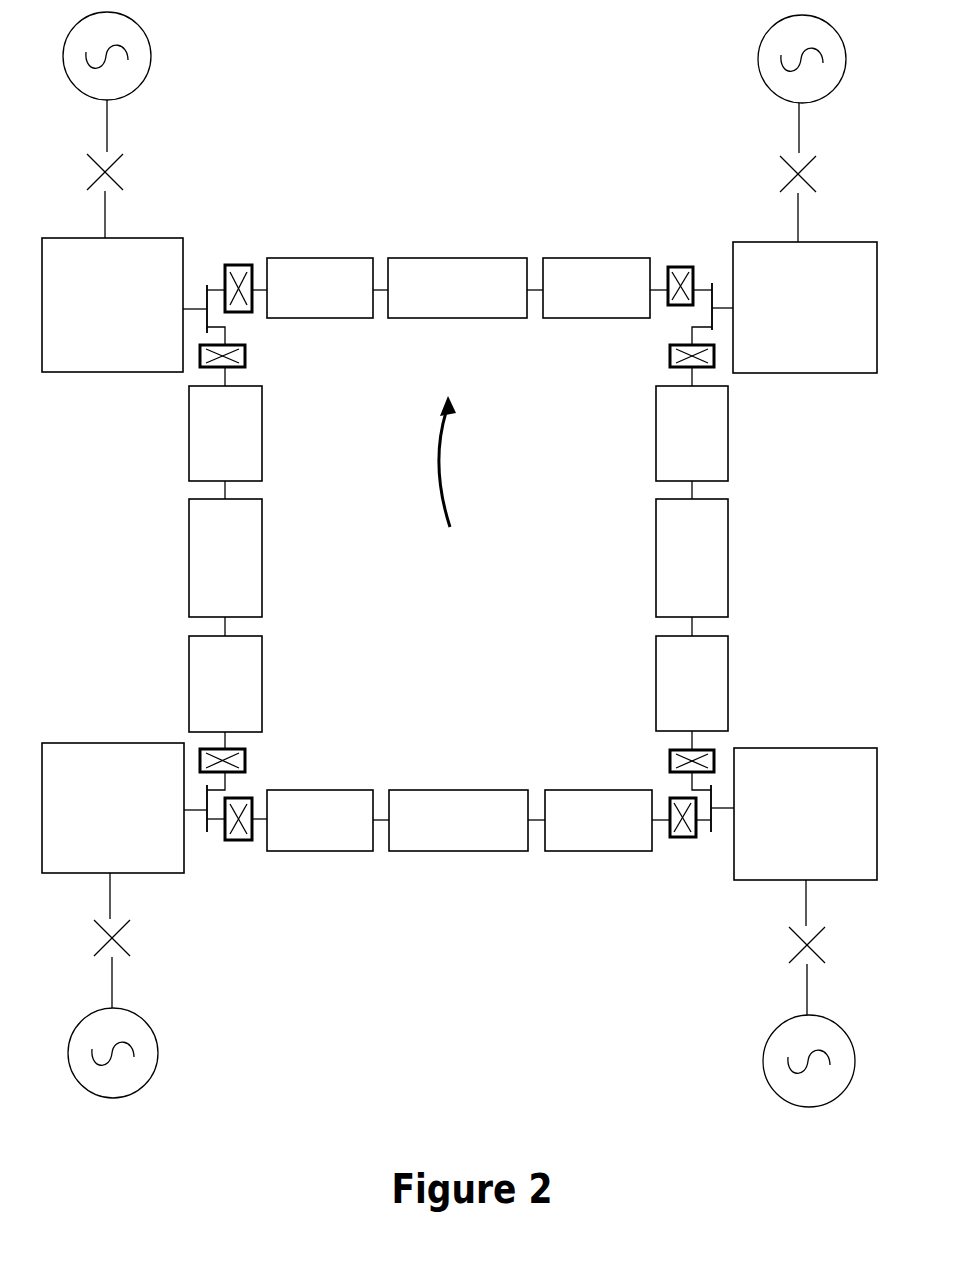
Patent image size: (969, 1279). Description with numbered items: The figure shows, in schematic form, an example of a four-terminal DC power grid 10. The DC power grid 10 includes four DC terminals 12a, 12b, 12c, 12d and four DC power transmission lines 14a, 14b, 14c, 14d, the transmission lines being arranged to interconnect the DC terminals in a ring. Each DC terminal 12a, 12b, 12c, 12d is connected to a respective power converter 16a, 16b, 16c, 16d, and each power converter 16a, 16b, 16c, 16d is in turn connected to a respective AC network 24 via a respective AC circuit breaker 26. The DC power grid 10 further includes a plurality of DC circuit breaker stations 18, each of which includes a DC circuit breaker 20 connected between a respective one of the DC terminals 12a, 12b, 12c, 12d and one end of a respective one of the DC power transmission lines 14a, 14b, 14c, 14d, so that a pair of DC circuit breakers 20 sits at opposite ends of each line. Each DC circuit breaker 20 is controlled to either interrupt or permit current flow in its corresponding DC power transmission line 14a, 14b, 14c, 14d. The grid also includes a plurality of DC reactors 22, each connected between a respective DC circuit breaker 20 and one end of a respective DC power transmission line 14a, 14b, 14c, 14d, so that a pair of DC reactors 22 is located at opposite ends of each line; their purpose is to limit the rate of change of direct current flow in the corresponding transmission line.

The DC power grid 10 is at (454, 488).
The DC terminal 12a is at (201, 296).
The DC terminal 12b is at (207, 823).
The DC terminal 12c is at (711, 822).
The DC terminal 12d is at (713, 293).
The DC power transmission line 14a is at (225, 558).
The DC power transmission line 14b is at (458, 820).
The DC power transmission line 14c is at (692, 558).
The DC power transmission line 14d is at (457, 288).
The power converter 16a is at (112, 305).
The power converter 16b is at (113, 808).
The power converter 16c is at (805, 814).
The power converter 16d is at (805, 307).
The DC circuit breaker station 18 is at (235, 256).
The DC circuit breaker 20 is at (238, 302).
The DC reactor 22 is at (458, 554).
The AC network 24 is at (142, 53).
The AC circuit breaker 26 is at (127, 173).